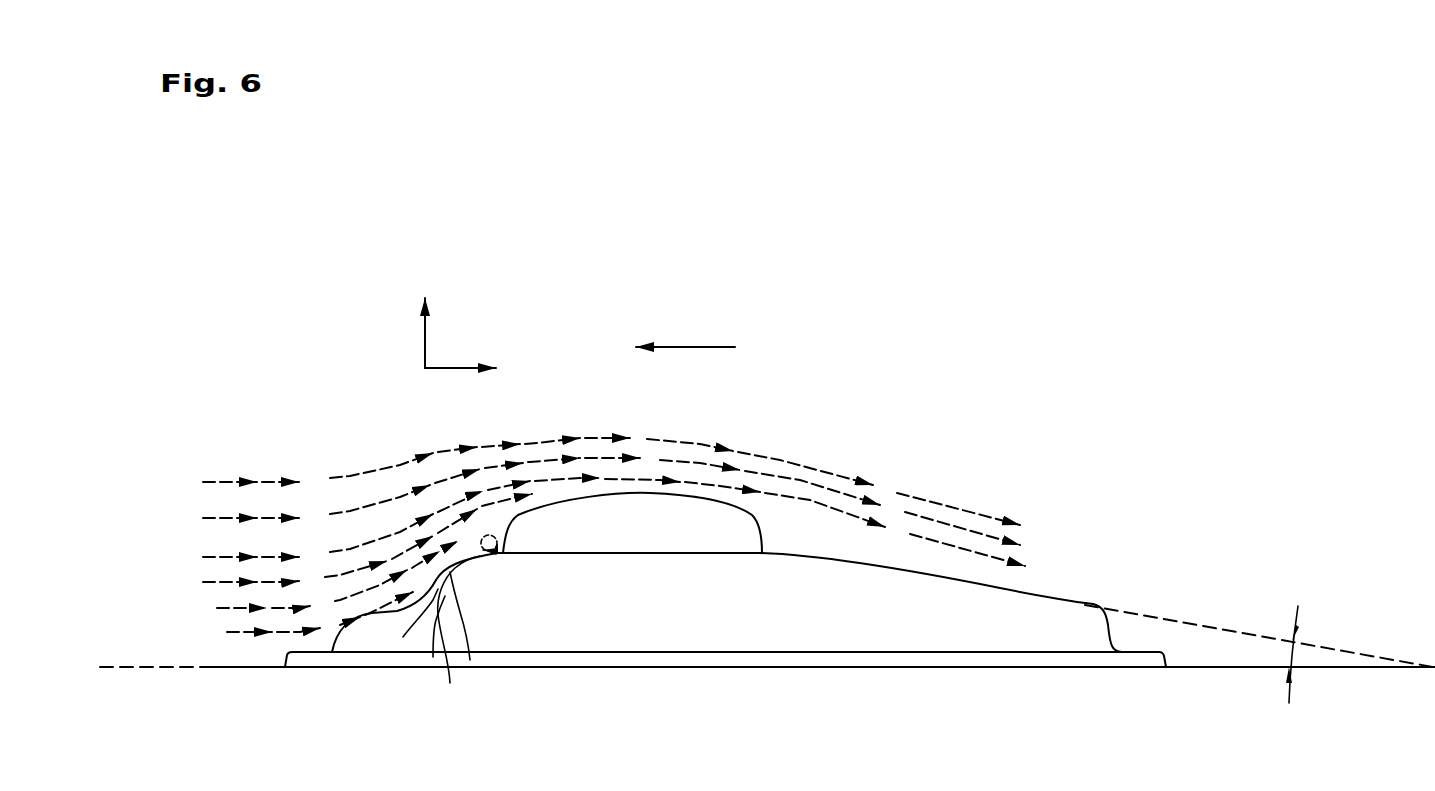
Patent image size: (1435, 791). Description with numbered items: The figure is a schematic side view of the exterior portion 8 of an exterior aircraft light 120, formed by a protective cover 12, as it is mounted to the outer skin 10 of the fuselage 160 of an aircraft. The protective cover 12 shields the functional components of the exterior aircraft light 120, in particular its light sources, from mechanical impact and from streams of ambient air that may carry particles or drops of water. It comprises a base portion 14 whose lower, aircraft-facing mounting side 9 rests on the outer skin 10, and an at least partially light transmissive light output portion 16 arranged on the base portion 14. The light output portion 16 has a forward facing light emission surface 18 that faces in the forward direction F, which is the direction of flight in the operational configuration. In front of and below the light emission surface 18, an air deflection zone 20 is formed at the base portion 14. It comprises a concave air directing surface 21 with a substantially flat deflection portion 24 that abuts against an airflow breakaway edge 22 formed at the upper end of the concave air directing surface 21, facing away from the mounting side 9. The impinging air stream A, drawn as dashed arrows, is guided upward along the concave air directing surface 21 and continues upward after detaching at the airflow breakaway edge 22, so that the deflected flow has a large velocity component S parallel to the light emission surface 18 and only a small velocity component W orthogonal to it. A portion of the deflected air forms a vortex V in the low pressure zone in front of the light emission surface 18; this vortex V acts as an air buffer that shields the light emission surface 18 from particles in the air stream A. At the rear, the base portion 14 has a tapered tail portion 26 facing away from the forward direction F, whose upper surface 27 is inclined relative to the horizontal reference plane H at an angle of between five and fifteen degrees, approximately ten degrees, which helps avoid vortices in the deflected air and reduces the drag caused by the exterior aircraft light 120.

The exterior aircraft light 120 is at (1045, 380).
The exterior portion 8 is at (1087, 423).
The protective cover 12 is at (1073, 560).
The light output portion 16 is at (767, 518).
The base portion 14 is at (1117, 618).
The forward facing light emission surface 18 is at (500, 550).
The tapered tail portion 26 is at (883, 558).
The upper surface of the tapered tail portion 27 is at (883, 567).
The mounting side 9 is at (562, 678).
The outer skin 10 is at (243, 668).
The concave air directing surface 21 is at (403, 637).
The air deflection zone 20 is at (433, 657).
The airflow breakaway edge 22 is at (470, 660).
The deflection portion 24 is at (450, 683).
The vortex V is at (506, 558).
The impinging air stream A is at (210, 472).
The forward direction F is at (690, 346).
The horizontal reference plane H is at (112, 666).
The velocity component parallel to the light emission surface S is at (414, 333).
The velocity component orthogonal to the light emission surface W is at (460, 383).
The fuselage 160 is at (765, 733).